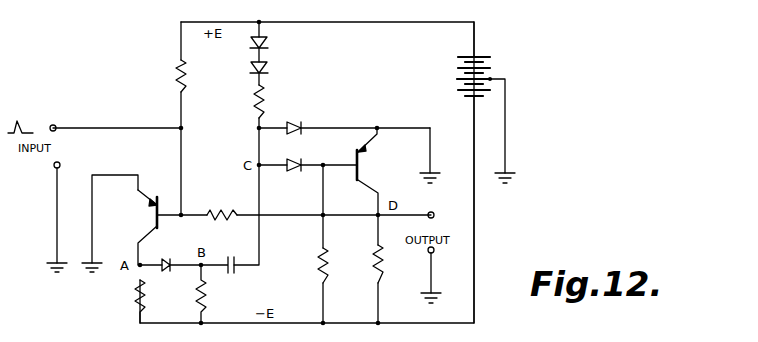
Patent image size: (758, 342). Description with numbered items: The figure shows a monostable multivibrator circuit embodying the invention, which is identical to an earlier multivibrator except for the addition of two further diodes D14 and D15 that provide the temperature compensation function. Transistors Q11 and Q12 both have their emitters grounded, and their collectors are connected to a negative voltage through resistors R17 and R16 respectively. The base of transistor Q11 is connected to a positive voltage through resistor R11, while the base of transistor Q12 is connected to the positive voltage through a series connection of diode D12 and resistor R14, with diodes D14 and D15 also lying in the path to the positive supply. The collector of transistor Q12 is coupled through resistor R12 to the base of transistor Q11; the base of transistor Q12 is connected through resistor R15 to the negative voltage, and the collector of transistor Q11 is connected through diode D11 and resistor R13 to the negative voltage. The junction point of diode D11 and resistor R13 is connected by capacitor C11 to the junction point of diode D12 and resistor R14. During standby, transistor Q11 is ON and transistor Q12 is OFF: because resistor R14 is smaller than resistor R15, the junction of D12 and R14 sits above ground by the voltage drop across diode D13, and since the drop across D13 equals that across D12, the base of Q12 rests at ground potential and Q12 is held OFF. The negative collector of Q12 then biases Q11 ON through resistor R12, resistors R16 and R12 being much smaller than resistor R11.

The resistor R11 is at (164, 76).
The resistor R12 is at (223, 205).
The resistor R13 is at (184, 294).
The resistor R14 is at (242, 101).
The resistor R15 is at (307, 265).
The resistor R16 is at (361, 264).
The resistor R17 is at (124, 301).
The diode D11 is at (170, 255).
The diode D12 is at (299, 156).
The diode D13 is at (299, 116).
The diode D14 is at (277, 45).
The diode D15 is at (277, 70).
The capacitor C11 is at (225, 277).
The transistor Q11 is at (146, 227).
The transistor Q12 is at (384, 171).